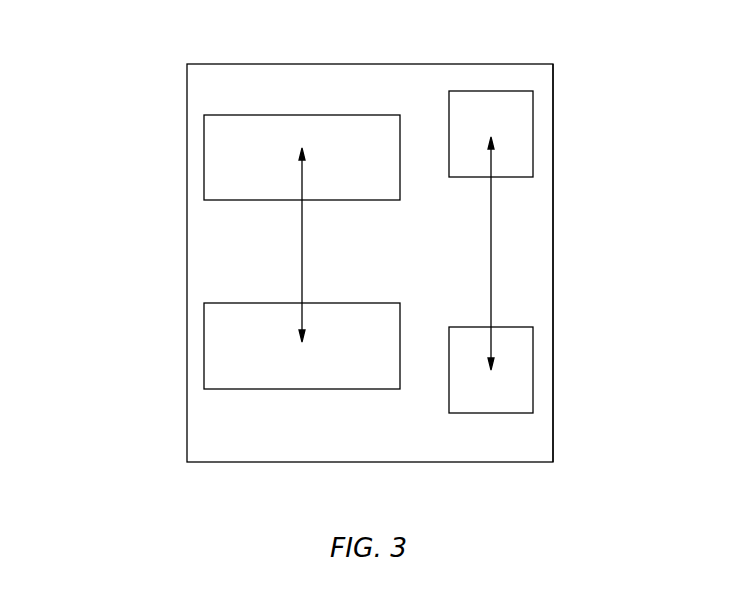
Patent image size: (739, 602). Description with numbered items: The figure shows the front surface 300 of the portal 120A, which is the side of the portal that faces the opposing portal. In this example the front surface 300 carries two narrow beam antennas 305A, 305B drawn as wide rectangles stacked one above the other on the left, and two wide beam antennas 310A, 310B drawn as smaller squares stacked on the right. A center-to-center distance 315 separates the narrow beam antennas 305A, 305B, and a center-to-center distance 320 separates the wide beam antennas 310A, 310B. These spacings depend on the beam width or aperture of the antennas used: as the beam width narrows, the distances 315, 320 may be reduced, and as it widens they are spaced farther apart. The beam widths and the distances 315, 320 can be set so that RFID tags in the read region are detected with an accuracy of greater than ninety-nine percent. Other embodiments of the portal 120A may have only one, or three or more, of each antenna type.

The front surface 300 is at (328, 86).
The portal 120A is at (553, 262).
The narrow beam antenna 305A is at (204, 155).
The narrow beam antenna 305B is at (204, 346).
The wide beam antenna 310A is at (533, 133).
The wide beam antenna 310B is at (533, 373).
The center-to-center distance 315 is at (302, 240).
The center-to-center distance 320 is at (491, 240).